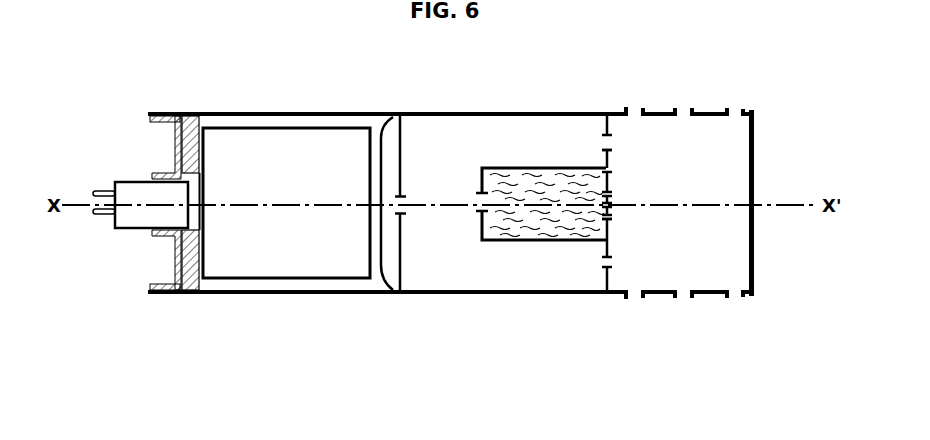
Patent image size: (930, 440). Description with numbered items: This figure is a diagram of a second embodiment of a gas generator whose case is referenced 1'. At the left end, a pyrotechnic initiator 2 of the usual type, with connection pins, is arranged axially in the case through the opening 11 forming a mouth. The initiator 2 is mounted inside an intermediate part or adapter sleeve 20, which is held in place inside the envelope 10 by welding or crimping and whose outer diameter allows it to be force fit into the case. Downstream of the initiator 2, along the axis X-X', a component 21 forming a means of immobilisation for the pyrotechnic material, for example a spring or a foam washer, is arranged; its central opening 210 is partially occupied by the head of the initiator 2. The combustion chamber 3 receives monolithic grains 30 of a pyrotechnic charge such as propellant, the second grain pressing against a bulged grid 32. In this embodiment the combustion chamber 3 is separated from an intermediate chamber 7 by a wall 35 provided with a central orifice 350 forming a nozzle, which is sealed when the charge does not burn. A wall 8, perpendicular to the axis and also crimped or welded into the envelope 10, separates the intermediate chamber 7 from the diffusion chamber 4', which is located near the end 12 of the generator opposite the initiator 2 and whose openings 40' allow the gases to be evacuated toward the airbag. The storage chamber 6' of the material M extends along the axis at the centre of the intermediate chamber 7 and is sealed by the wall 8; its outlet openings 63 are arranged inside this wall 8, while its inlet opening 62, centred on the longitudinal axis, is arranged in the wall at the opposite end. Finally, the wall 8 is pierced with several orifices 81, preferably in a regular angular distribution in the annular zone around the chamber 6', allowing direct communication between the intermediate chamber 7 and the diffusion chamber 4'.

The case 1' is at (439, 311).
The pyrotechnic initiator 2 is at (138, 191).
The combustion chamber 3 is at (328, 112).
The diffusion chamber 4' is at (760, 203).
The storage chamber of the material M 6' is at (544, 249).
The intermediate chamber 7 is at (510, 137).
The wall 8 is at (603, 281).
The envelope 10 is at (535, 110).
The opening 11 is at (156, 262).
The end 12 is at (755, 245).
The adapter sleeve 20 is at (175, 152).
The means of immobilisation 21 is at (192, 147).
The monolithic grains 30 is at (318, 257).
The bulged grid 32 is at (381, 277).
The wall 35 is at (401, 153).
The openings 40' is at (702, 203).
The inlet opening 62 is at (478, 212).
The outlet openings 63 is at (608, 180).
The orifices 81 is at (608, 140).
The central opening 210 is at (197, 217).
The central orifice 350 is at (413, 212).
The material M is at (542, 160).